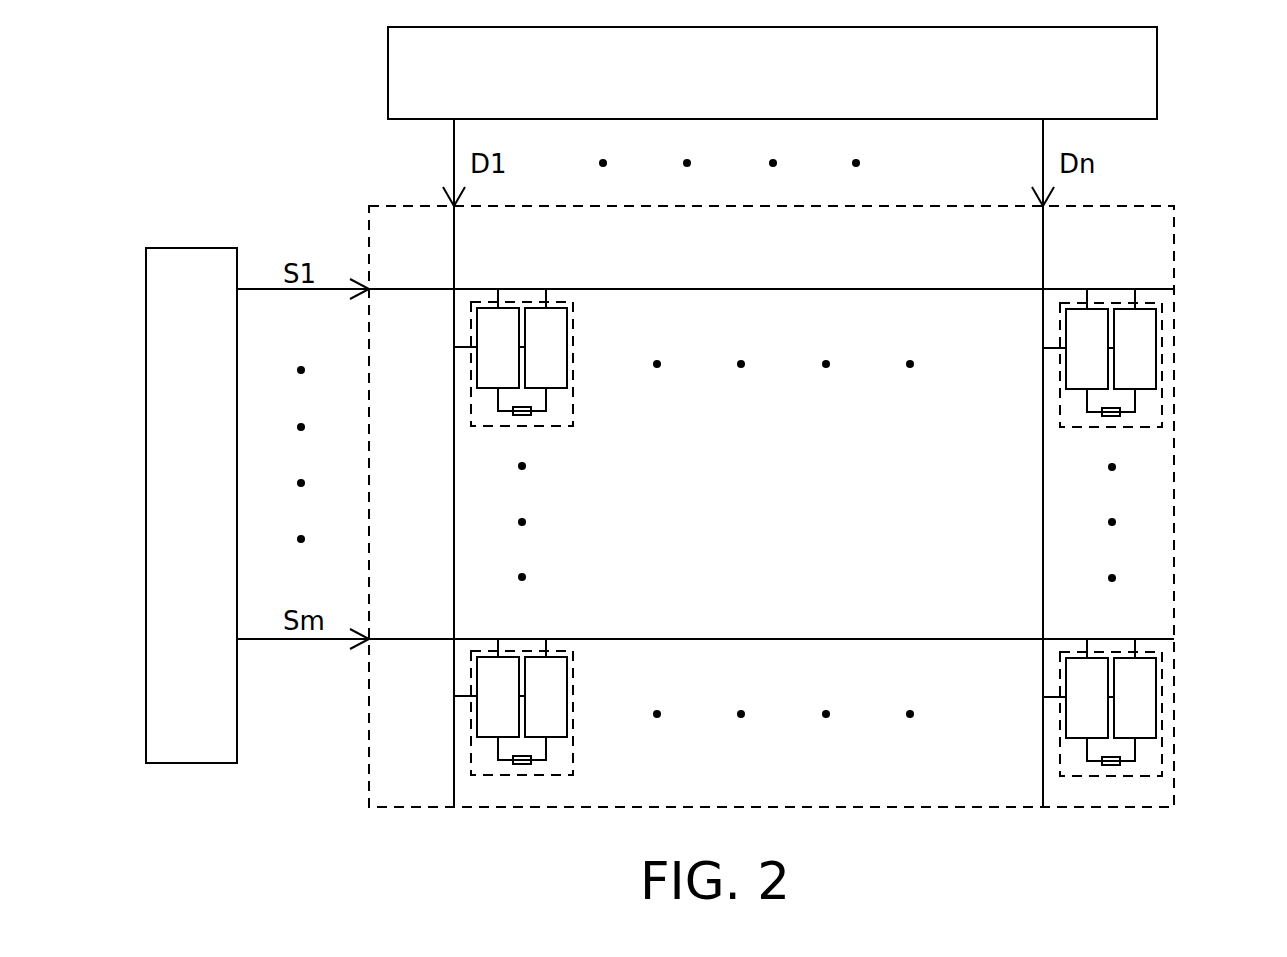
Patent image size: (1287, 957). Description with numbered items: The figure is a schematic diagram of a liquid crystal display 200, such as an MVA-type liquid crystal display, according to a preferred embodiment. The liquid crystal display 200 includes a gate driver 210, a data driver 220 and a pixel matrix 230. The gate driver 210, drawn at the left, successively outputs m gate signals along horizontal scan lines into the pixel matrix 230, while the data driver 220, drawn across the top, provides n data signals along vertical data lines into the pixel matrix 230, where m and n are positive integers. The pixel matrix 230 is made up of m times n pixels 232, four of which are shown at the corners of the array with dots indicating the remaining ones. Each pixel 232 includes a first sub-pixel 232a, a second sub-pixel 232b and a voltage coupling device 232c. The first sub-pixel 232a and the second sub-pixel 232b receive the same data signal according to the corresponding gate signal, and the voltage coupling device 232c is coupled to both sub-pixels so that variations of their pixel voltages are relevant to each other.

The liquid crystal display 200 is at (150, 68).
The gate driver 210 is at (193, 247).
The data driver 220 is at (1157, 73).
The pixel matrix 230 is at (1176, 548).
The pixel 232 is at (573, 400).
The first sub-pixel 232a is at (508, 317).
The second sub-pixel 232b is at (557, 322).
The voltage coupling device 232c is at (522, 416).